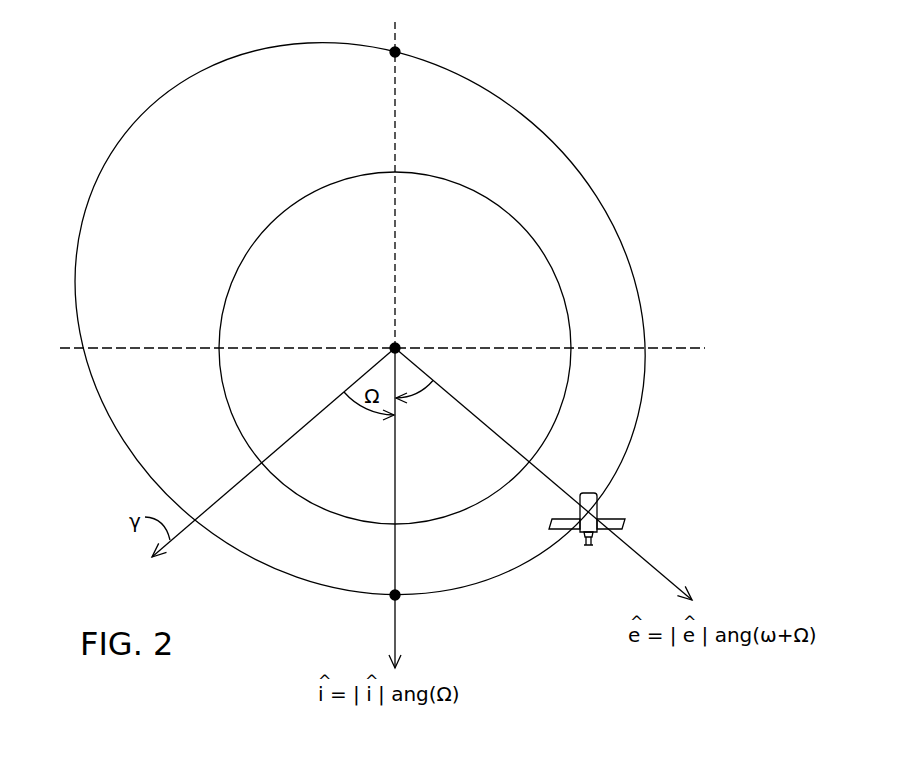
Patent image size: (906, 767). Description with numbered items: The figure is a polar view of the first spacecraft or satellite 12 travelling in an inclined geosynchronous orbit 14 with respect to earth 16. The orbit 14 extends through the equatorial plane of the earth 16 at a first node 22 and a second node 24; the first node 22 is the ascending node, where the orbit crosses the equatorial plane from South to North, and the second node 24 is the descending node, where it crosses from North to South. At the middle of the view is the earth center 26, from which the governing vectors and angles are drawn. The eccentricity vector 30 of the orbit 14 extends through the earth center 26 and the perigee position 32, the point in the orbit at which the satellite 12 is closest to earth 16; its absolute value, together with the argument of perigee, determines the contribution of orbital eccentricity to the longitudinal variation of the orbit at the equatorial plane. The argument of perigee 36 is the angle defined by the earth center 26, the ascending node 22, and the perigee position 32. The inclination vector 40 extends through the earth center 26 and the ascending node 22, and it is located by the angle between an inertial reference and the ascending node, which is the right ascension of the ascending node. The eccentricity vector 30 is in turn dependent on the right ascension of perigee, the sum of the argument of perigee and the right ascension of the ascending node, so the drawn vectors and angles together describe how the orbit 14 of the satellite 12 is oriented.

The first spacecraft or satellite 12 is at (620, 518).
The inclined geosynchronous orbit 14 is at (642, 305).
The earth 16 is at (240, 262).
The first node 22 is at (391, 600).
The second node 24 is at (405, 52).
The earth center 26 is at (392, 343).
The eccentricity vector 30 is at (672, 583).
The perigee position 32 is at (598, 510).
The argument of perigee 36 is at (416, 378).
The inclination vector 40 is at (398, 628).